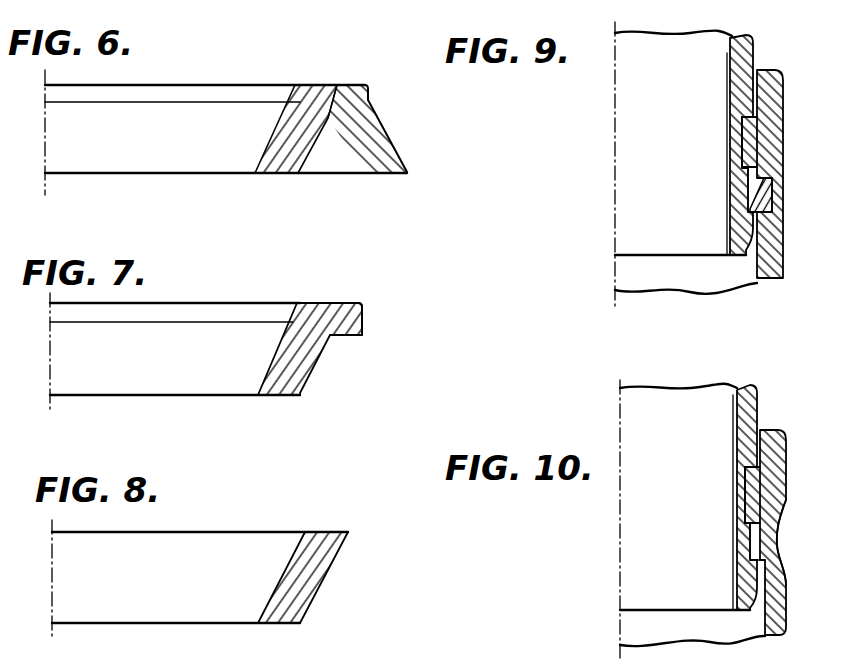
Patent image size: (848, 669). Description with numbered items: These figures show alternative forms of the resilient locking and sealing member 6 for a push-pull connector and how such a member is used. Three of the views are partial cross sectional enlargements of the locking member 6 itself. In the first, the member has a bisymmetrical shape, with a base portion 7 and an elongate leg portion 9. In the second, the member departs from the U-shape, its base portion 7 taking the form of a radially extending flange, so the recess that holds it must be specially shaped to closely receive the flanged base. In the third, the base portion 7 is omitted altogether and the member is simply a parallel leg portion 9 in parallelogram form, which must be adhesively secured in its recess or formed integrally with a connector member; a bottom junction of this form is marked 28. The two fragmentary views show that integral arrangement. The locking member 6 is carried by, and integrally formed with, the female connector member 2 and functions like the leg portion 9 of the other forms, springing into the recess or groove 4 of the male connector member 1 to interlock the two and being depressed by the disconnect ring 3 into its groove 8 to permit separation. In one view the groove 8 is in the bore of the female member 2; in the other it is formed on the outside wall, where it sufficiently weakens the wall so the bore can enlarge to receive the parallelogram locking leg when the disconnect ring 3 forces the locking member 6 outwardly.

In FIG. 9, the male connector member 1 is at (733, 78).
In FIG. 10, the male connector member 1 is at (735, 410).
In FIG. 9, the female connector member 2 is at (784, 100).
In FIG. 10, the female connector member 2 is at (787, 455).
In FIG. 9, the disconnect ring 3 is at (752, 146).
In FIG. 10, the disconnect ring 3 is at (752, 500).
In FIG. 9, the recess or groove 4 is at (745, 185).
In FIG. 10, the recess or groove 4 is at (752, 532).
In FIG. 6, the resilient locking and sealing member 6 is at (355, 116).
In FIG. 7, the resilient locking and sealing member 6 is at (313, 345).
In FIG. 8, the resilient locking and sealing member 6 is at (310, 582).
In FIG. 9, the resilient locking and sealing member 6 is at (745, 203).
In FIG. 10, the resilient locking and sealing member 6 is at (752, 562).
In FIG. 6, the base portion 7 is at (387, 155).
In FIG. 7, the base portion 7 is at (360, 317).
In FIG. 9, the recess or groove 8 is at (766, 204).
In FIG. 10, the recess or groove 8 is at (778, 545).
In FIG. 6, the leg portion 9 is at (265, 136).
In FIG. 7, the leg portion 9 is at (273, 365).
In FIG. 6, the joint 28 is at (278, 175).
In FIG. 7, the joint 28 is at (287, 396).